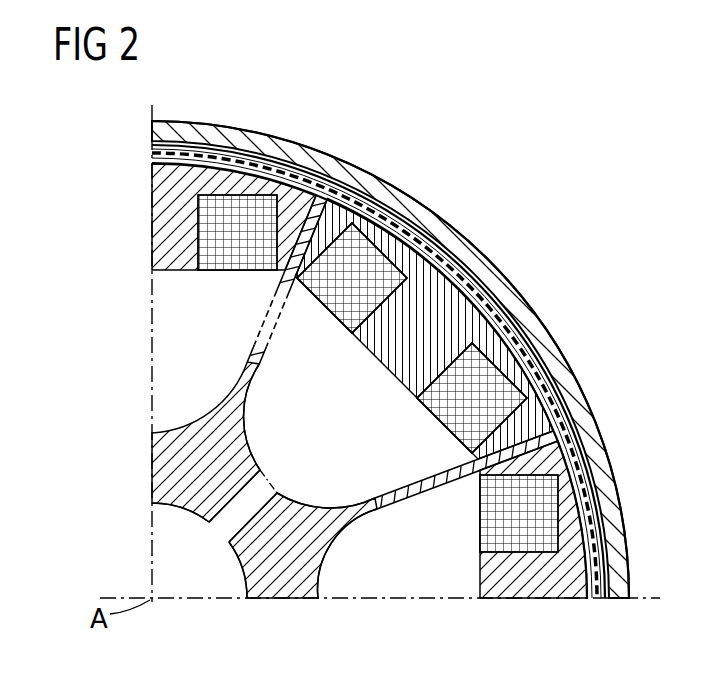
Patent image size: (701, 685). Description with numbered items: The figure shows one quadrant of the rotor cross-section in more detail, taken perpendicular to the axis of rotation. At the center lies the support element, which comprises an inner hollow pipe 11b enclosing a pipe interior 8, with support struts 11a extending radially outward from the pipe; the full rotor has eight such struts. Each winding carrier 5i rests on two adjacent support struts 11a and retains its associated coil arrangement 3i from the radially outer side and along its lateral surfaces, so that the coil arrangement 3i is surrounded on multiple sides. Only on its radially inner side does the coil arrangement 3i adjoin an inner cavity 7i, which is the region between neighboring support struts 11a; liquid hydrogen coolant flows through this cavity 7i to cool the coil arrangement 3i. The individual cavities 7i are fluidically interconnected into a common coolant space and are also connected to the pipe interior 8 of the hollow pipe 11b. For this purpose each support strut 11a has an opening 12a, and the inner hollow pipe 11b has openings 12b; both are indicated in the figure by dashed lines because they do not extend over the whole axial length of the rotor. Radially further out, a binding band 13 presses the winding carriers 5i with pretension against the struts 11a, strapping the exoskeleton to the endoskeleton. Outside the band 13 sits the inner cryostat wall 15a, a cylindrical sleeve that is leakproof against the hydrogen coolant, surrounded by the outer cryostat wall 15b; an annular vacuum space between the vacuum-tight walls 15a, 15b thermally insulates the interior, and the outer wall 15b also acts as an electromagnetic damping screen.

The coil arrangement 3i is at (345, 316).
The winding carrier 5i is at (397, 371).
The inner cavity 7i is at (320, 455).
The pipe interior 8 is at (173, 545).
The support strut 11a is at (413, 492).
The inner hollow pipe 11b is at (288, 582).
The opening 12a is at (244, 318).
The opening 12b is at (213, 528).
The binding band 13 is at (548, 349).
The inner cryostat wall 15a is at (493, 298).
The outer cryostat wall 15b is at (463, 247).